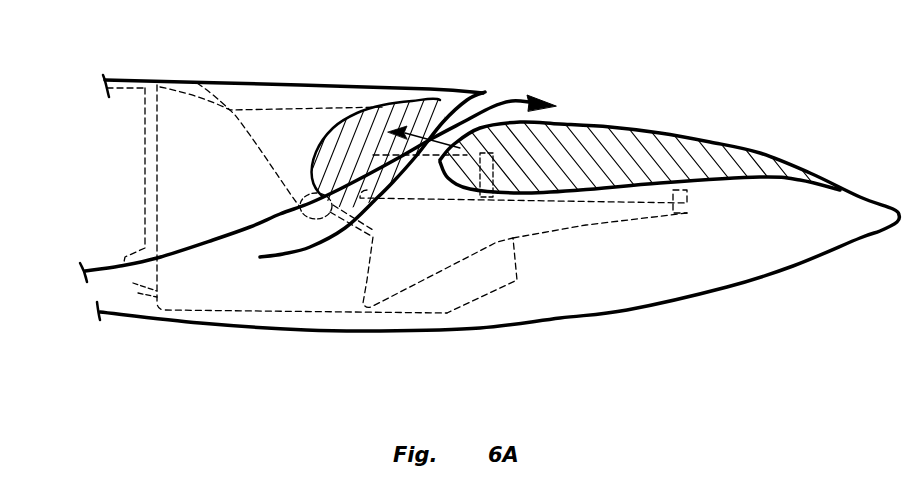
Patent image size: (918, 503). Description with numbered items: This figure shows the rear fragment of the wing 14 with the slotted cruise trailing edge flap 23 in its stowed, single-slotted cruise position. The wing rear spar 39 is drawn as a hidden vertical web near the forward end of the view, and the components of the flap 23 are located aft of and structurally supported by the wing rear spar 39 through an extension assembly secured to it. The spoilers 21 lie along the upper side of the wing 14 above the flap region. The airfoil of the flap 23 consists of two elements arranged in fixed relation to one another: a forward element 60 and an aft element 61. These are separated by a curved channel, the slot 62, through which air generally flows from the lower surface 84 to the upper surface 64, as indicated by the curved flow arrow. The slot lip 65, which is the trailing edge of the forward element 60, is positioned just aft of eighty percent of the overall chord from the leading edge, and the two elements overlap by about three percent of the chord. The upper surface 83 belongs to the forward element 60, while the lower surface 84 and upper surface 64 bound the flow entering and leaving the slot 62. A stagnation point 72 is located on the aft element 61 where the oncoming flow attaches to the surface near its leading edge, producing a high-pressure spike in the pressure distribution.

The wing 14 is at (155, 80).
The spoilers 21 is at (297, 92).
The slotted cruise trailing edge flap 23 is at (576, 170).
The wing rear spar 39 is at (144, 182).
The forward element 60 is at (397, 115).
The aft element 61 is at (667, 157).
The slot 62 is at (516, 97).
The upper surface 64 is at (740, 155).
The slot lip 65 is at (488, 92).
The stagnation point 72 is at (445, 152).
The upper surface 83 is at (105, 80).
The lower surface 84 is at (107, 266).